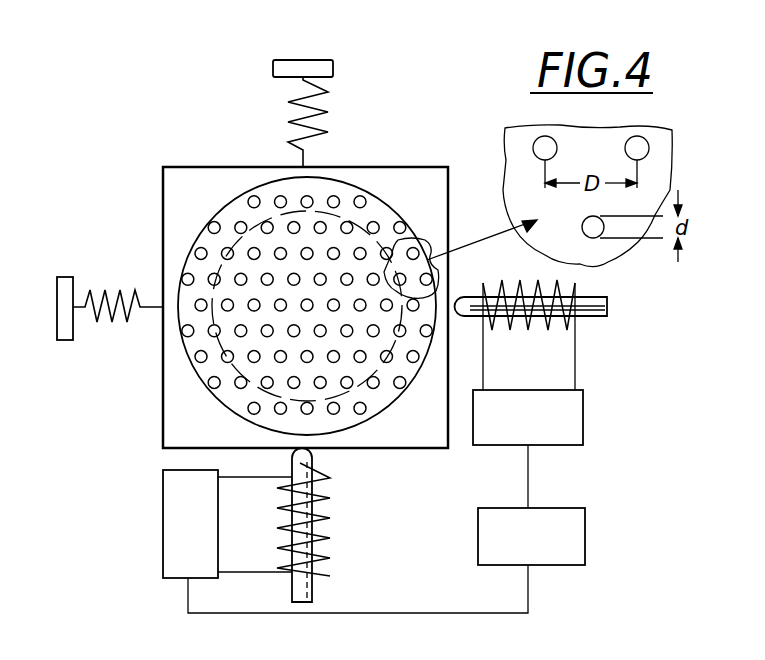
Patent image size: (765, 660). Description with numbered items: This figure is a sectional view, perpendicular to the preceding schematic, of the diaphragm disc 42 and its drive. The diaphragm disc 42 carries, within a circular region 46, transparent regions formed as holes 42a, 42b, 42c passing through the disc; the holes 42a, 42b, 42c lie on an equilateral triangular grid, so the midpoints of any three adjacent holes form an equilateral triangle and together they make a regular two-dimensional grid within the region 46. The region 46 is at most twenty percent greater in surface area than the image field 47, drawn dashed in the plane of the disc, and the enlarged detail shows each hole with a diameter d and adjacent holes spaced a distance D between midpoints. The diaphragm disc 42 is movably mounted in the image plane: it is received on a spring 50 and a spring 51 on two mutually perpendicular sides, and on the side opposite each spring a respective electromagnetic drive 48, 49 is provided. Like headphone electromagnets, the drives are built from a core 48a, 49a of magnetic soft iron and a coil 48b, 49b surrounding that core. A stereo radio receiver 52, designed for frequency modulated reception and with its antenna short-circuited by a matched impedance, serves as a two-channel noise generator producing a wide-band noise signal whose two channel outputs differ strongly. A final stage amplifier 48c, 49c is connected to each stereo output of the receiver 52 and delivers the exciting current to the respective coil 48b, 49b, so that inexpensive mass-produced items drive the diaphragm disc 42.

The diaphragm disc 42 is at (387, 167).
The hole 42a is at (223, 359).
The hole 42b is at (213, 334).
The hole 42c is at (213, 385).
The circular region 46 is at (240, 193).
The image field 47 is at (228, 248).
The electromagnetic drive 48 is at (605, 314).
The core 48a is at (469, 292).
The coil 48b is at (577, 283).
The final stage amplifier 48c is at (570, 420).
The electromagnetic drive 49 is at (313, 588).
The core 49a is at (314, 463).
The coil 49b is at (326, 518).
The final stage amplifier 49c is at (170, 546).
The spring 50 is at (333, 104).
The spring 51 is at (112, 325).
The stereo radio receiver 52 is at (575, 538).